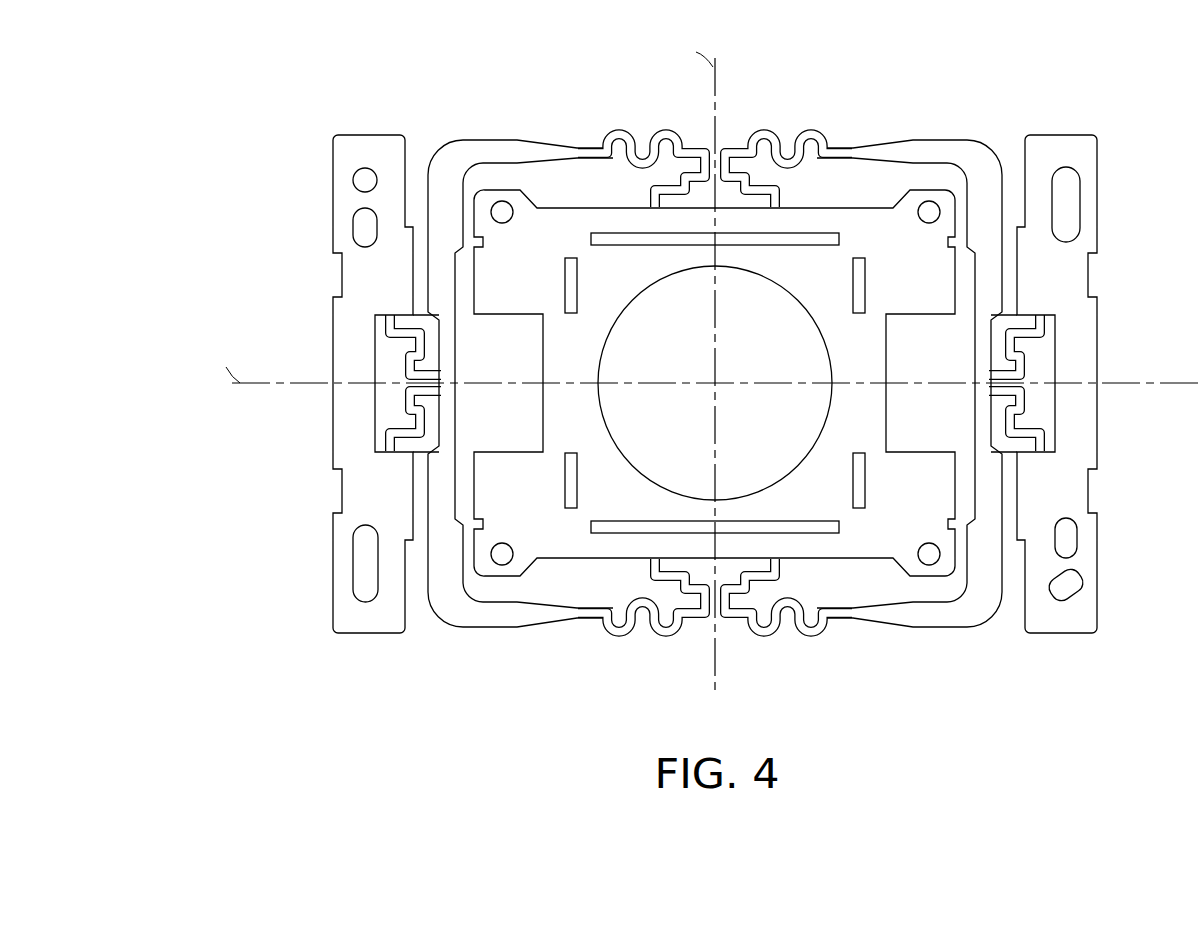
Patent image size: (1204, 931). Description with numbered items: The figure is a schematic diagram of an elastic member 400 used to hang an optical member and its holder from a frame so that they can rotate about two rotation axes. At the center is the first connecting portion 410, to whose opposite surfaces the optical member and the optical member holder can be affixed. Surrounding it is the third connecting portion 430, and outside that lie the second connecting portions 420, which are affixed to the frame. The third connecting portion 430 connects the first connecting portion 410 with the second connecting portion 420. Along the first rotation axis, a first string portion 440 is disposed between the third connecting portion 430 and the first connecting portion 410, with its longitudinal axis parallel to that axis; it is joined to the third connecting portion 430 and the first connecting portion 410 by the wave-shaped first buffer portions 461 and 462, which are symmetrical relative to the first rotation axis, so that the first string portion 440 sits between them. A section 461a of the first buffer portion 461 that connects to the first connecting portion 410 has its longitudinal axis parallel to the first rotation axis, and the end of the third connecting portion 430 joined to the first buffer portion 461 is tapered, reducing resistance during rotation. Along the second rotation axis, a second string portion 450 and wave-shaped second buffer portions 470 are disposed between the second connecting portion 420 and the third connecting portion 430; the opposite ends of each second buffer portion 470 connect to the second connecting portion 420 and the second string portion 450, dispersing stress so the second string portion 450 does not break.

The elastic member 400 is at (135, 58).
The first connecting portion 410 is at (912, 243).
The second connecting portion 420 is at (352, 268).
The third connecting portion 430 is at (461, 154).
The first string portion 440 is at (724, 172).
The second string portion 450 is at (413, 386).
The first buffer portion 461 is at (628, 172).
The section of the first buffer portion 461a is at (652, 198).
The first buffer portion 462 is at (703, 176).
The second buffer portion 470 is at (384, 325).